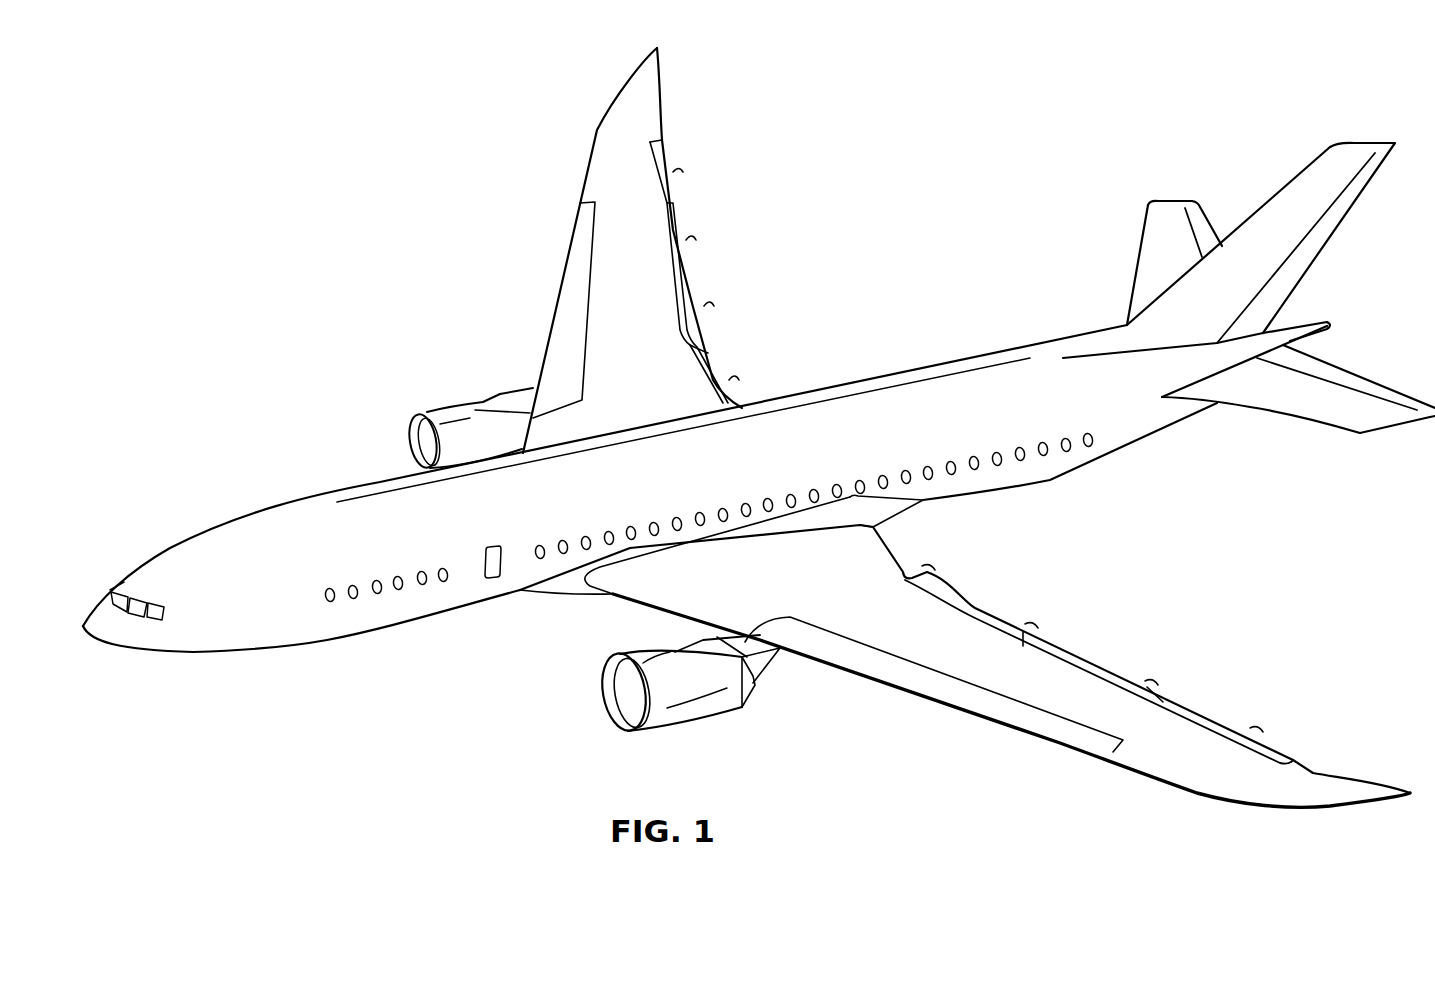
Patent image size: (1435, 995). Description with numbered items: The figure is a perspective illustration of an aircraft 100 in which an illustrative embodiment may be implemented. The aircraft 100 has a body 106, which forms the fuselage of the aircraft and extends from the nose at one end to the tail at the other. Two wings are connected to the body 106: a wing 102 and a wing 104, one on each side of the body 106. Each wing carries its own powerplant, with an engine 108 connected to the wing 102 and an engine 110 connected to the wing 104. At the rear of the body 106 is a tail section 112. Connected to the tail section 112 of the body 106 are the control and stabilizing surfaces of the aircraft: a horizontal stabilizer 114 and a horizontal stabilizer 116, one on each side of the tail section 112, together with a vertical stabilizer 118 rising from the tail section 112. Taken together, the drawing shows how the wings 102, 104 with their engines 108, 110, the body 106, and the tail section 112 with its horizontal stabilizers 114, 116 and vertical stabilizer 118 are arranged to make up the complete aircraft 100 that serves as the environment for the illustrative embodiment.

The aircraft 100 is at (360, 204).
The wing 102 is at (657, 85).
The wing 104 is at (1253, 806).
The body 106 is at (263, 507).
The engine 108 is at (448, 400).
The engine 110 is at (693, 721).
The tail section 112 is at (1205, 467).
The horizontal stabilizer 114 is at (1138, 262).
The horizontal stabilizer 116 is at (1313, 422).
The vertical stabilizer 118 is at (1340, 232).